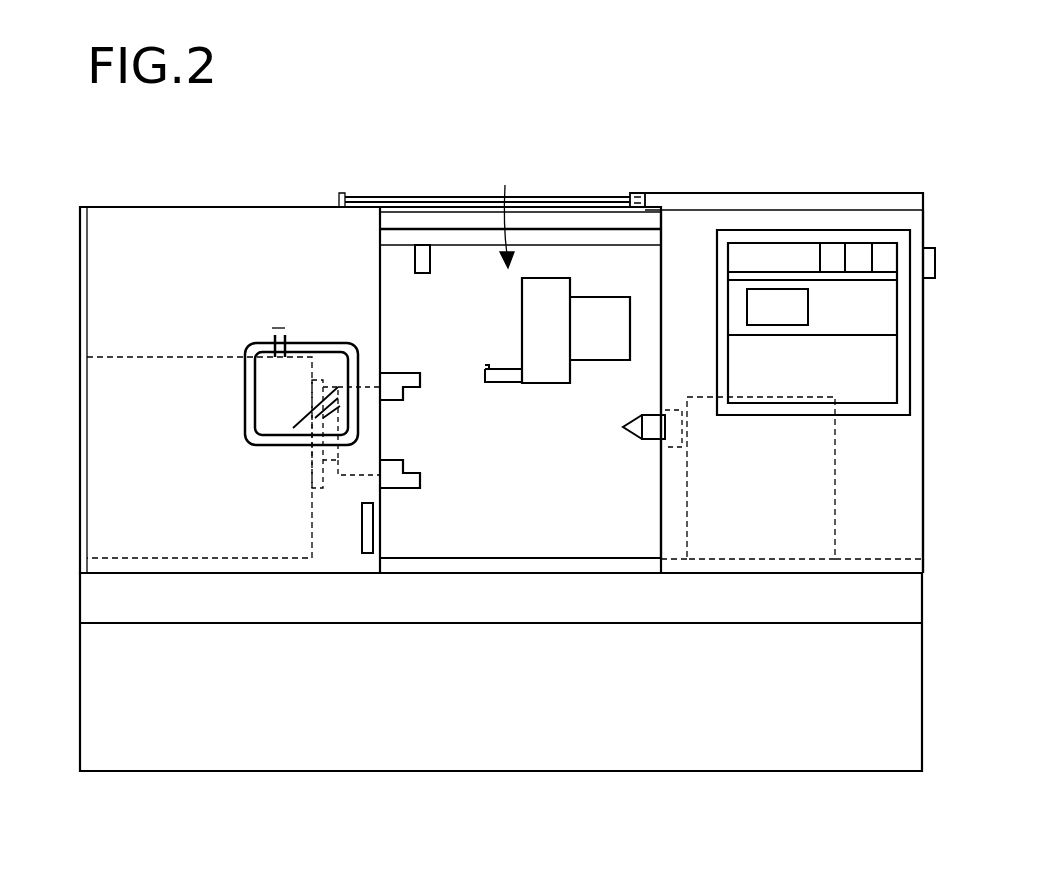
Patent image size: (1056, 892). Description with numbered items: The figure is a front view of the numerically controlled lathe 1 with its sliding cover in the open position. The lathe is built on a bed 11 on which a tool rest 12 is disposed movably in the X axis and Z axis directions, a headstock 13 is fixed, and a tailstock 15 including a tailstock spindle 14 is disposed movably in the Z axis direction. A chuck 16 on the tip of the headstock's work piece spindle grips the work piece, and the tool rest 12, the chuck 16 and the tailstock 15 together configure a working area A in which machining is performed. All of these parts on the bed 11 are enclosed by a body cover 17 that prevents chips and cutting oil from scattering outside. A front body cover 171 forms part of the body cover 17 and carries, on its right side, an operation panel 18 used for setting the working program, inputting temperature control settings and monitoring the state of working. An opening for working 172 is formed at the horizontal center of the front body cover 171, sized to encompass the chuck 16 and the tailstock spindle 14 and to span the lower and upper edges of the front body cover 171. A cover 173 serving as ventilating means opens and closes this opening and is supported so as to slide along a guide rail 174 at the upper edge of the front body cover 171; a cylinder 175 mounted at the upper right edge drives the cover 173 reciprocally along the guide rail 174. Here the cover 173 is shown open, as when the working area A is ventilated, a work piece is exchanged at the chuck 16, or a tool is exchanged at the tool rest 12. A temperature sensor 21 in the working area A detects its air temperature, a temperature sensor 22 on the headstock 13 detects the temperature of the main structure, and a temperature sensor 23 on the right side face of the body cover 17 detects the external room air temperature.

The numerically controlled lathe 1 is at (444, 148).
The bed 11 is at (369, 755).
The tool rest 12 is at (543, 285).
The headstock 13 is at (175, 352).
The tailstock spindle 14 is at (628, 412).
The tailstock 15 is at (838, 497).
The chuck 16 is at (372, 385).
The body cover 17 is at (925, 448).
The operation panel 18 is at (801, 240).
The temperature sensor 21 is at (420, 226).
The temperature sensor 22 is at (278, 328).
The temperature sensor 23 is at (937, 262).
The front body cover 171 is at (705, 228).
The opening for working 172 is at (652, 245).
The cover 173 is at (226, 222).
The guide rail 174 is at (468, 232).
The cylinder 175 is at (847, 200).
The working area A is at (506, 214).